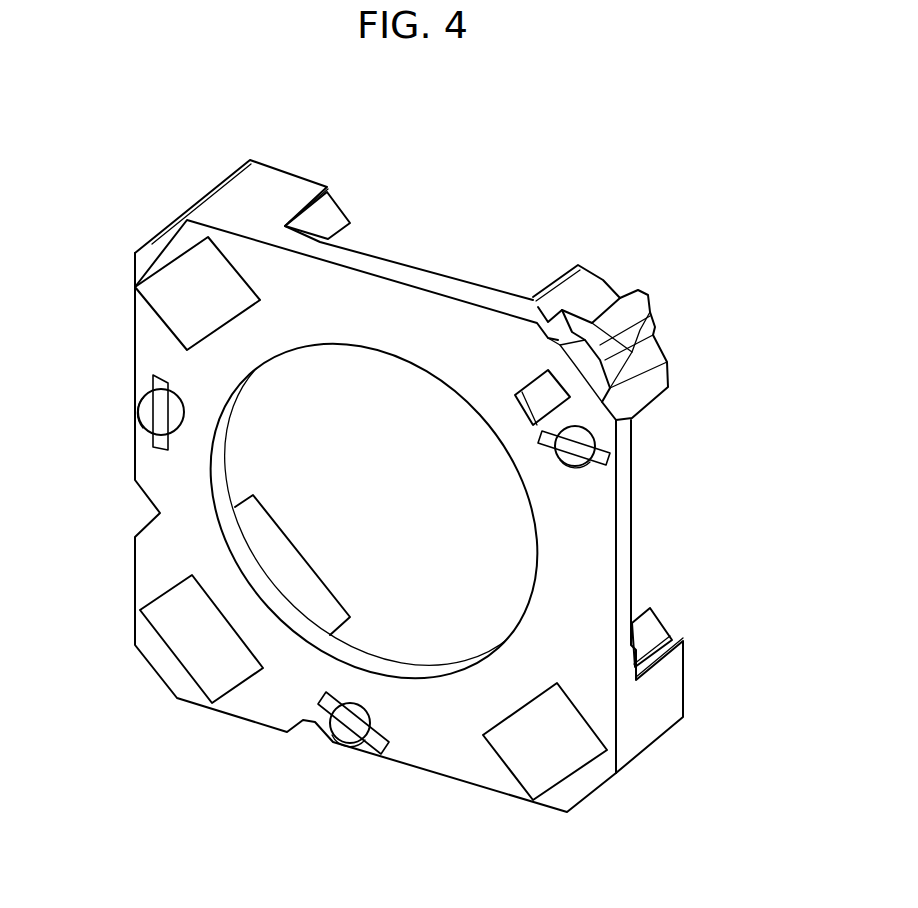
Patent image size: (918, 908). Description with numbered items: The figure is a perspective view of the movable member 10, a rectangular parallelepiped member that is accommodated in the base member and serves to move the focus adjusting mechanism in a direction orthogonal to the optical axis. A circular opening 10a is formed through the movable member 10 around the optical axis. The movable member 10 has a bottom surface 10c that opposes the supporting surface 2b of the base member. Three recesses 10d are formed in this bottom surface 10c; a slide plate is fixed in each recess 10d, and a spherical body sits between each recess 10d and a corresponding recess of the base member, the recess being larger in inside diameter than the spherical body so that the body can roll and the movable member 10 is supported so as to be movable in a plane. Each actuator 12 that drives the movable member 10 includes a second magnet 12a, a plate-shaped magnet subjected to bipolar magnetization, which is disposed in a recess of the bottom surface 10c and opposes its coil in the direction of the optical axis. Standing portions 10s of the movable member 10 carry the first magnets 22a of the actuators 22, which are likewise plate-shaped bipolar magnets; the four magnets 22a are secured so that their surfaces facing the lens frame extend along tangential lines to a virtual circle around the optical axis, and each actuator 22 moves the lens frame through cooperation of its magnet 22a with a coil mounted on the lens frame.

The movable member 10 is at (418, 280).
The circular opening 10a is at (220, 463).
The bottom surface 10c is at (587, 548).
The recess 10d is at (145, 417).
The standing portion 10s is at (278, 180).
The actuator 12 is at (354, 517).
The second magnet 12a is at (188, 285).
The actuator 22 is at (497, 389).
The first magnet 22a is at (332, 213).
The supporting surface 2b is at (528, 410).